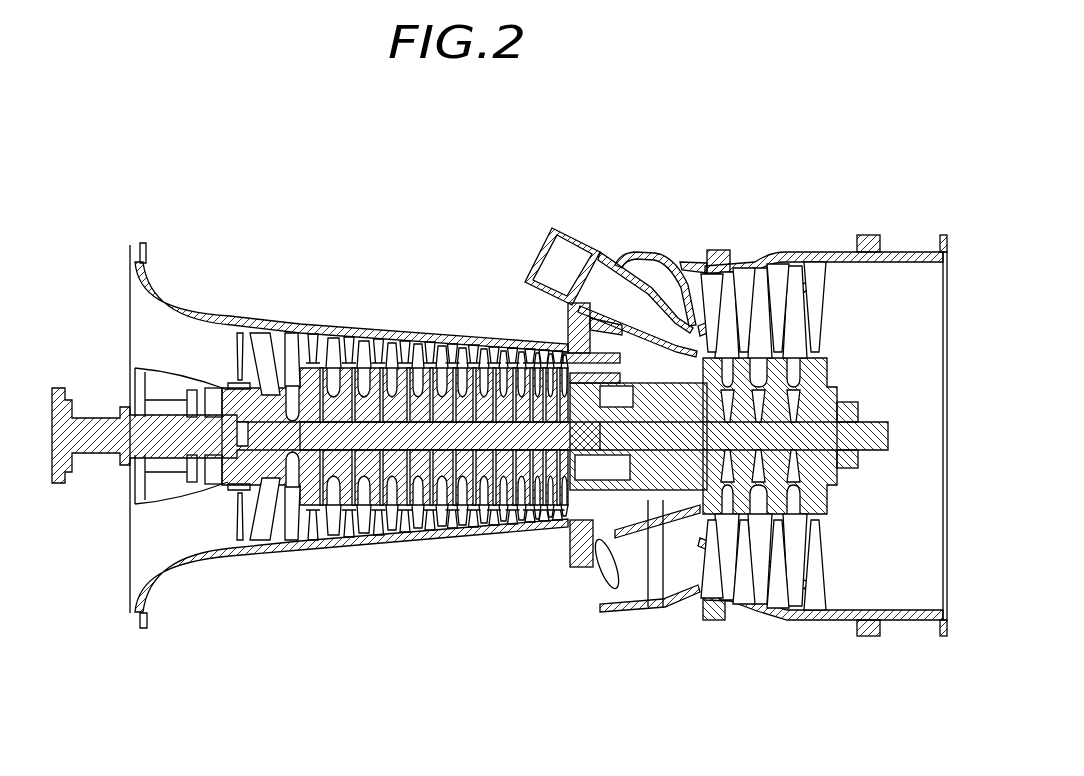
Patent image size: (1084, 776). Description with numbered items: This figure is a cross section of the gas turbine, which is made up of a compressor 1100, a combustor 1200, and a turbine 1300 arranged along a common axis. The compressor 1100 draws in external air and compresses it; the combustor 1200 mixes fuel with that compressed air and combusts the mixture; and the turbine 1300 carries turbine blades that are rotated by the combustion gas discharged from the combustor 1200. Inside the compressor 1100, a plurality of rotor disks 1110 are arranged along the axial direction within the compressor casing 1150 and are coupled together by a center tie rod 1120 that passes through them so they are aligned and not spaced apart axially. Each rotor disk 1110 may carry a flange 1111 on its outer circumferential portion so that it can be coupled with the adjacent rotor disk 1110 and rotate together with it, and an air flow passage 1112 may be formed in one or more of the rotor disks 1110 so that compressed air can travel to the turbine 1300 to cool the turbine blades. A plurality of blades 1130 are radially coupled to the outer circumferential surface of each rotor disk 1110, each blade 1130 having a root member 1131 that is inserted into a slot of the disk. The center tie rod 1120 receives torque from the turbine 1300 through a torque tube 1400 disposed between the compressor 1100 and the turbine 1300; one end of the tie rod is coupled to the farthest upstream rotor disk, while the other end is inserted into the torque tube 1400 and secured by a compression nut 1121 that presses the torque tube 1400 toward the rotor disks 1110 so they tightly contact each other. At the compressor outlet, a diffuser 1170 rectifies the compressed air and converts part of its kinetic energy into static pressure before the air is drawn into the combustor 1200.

The compressor 1100 is at (376, 454).
The rotor disk 1110 is at (409, 375).
The flange 1111 is at (262, 333).
The air flow passage 1112 is at (280, 477).
The center tie rod 1120 is at (462, 440).
The compression nut 1121 is at (613, 513).
The blade 1130 is at (298, 333).
The root member 1131 is at (312, 333).
The compressor casing 1150 is at (425, 325).
The diffuser 1170 is at (608, 333).
The combustor 1200 is at (616, 239).
The turbine 1300 is at (746, 505).
The torque tube 1400 is at (638, 480).